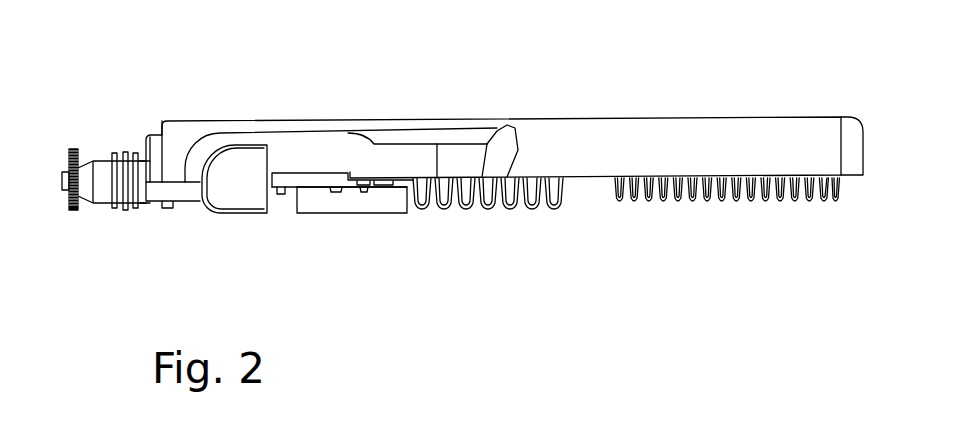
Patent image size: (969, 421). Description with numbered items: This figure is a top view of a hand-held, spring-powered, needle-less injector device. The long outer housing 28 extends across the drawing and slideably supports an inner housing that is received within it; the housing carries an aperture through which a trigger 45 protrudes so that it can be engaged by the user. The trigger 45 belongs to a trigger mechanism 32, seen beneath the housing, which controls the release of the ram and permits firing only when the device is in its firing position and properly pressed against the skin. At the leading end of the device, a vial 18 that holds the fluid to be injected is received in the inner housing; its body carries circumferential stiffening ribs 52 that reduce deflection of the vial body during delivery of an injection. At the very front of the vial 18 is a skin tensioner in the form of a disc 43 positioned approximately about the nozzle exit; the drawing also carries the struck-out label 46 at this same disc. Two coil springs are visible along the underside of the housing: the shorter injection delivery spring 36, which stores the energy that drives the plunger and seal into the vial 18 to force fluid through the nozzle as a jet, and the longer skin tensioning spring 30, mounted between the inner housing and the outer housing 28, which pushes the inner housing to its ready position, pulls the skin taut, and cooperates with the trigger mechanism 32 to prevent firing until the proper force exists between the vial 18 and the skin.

The vial 18 is at (93, 158).
The outer housing 28 is at (647, 117).
The skin tensioning spring 30 is at (673, 202).
The trigger mechanism 32 is at (292, 180).
The injection delivery spring 36 is at (470, 207).
The disc 43 is at (60, 273).
The trigger 45 is at (250, 192).
The knurled wheel (struck numeral) 46 is at (73, 210).
The circumferential stiffening ribs 52 is at (126, 210).